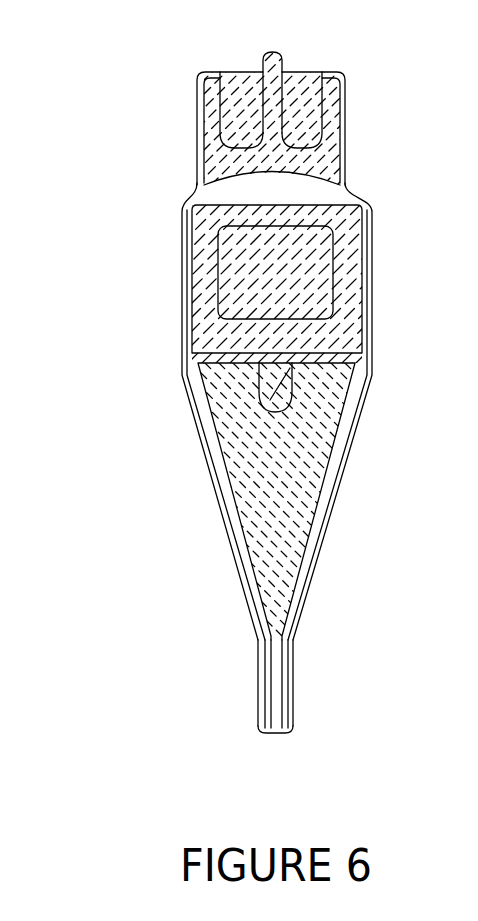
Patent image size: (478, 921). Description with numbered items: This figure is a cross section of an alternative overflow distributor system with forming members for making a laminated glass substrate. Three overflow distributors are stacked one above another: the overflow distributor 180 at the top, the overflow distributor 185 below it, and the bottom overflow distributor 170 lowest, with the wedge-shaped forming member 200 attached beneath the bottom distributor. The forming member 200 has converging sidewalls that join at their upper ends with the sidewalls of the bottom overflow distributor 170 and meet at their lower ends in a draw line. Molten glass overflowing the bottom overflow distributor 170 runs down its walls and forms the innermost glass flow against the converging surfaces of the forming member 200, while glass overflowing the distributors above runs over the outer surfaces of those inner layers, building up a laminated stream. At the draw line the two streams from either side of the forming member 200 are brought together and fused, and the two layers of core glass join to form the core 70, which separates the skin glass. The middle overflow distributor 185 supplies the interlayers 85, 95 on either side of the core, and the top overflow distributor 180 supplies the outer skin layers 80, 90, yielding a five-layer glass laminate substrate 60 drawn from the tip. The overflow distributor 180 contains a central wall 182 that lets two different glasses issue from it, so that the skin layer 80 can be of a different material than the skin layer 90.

The glass laminate substrate 60 is at (252, 722).
The core 70 is at (290, 658).
The skin layer 80 is at (262, 658).
The interlayer 85 is at (268, 698).
The skin layer 90 is at (290, 722).
The interlayer 95 is at (290, 683).
The bottom overflow distributor 170 is at (185, 370).
The overflow distributor 180 is at (193, 91).
The central wall 182 is at (285, 62).
The overflow distributor 185 is at (183, 225).
The wedge-shaped forming member 200 is at (220, 505).